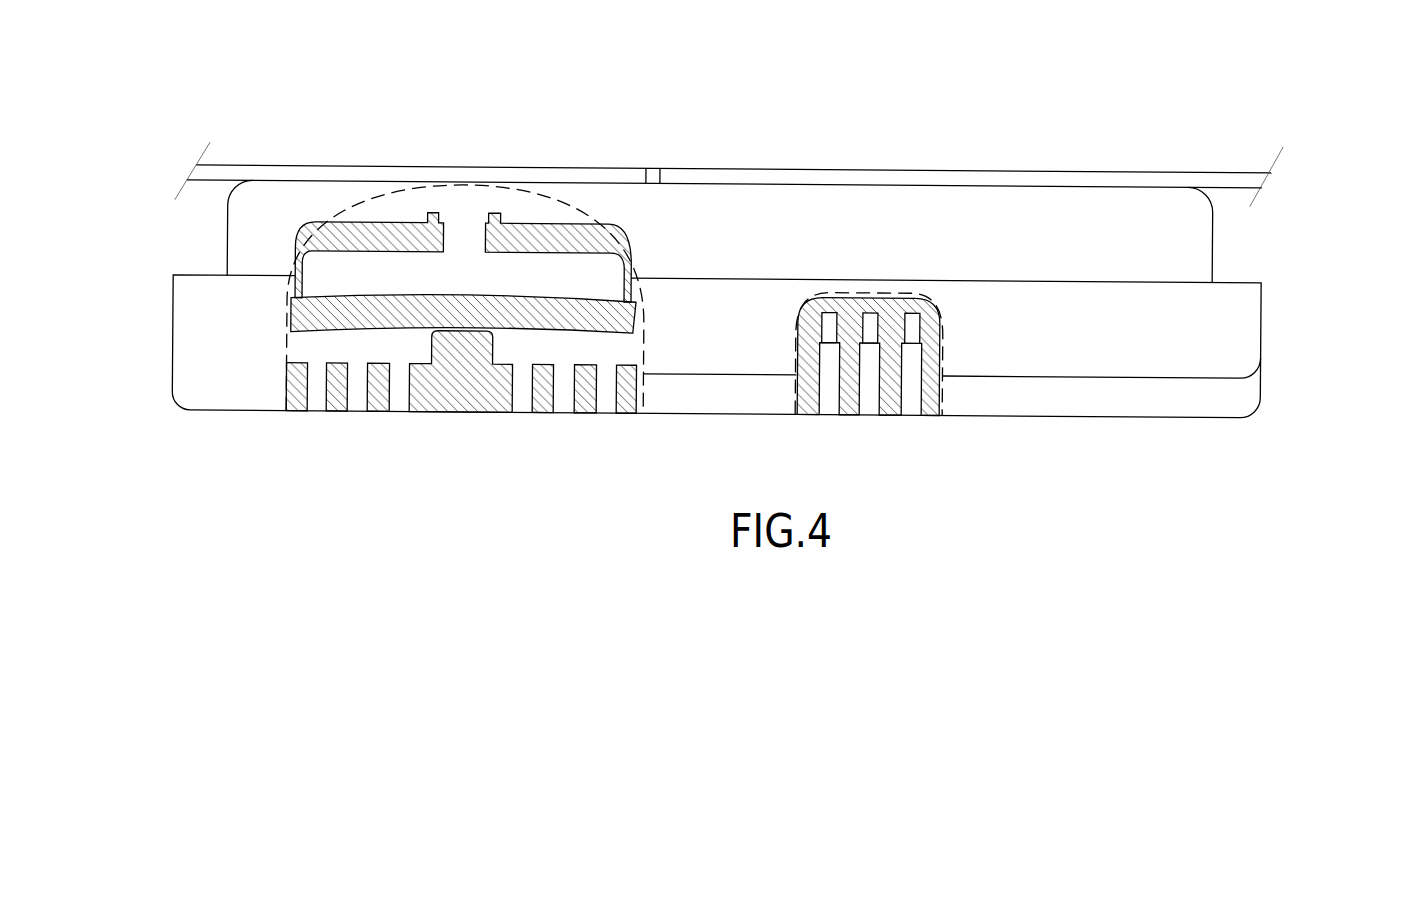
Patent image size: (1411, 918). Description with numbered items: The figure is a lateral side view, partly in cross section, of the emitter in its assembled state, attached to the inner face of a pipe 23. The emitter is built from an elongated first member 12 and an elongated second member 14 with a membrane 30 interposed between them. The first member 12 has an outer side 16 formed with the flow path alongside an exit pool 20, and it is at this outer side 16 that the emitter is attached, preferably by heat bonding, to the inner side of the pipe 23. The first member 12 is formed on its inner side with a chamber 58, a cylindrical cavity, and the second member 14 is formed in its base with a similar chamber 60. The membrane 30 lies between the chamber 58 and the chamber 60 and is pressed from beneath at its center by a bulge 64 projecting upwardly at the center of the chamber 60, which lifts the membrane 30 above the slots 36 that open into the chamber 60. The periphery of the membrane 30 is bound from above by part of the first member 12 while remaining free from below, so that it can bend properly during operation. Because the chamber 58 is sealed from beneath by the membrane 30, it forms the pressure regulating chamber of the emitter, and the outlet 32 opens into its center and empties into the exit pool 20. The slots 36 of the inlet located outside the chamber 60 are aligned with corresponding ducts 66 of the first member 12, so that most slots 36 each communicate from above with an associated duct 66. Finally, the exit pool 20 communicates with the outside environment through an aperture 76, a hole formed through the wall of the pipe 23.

The first member 12 is at (1216, 248).
The second member 14 is at (1268, 323).
The outer side 16 is at (945, 183).
The exit pool 20 is at (540, 207).
The pipe 23 is at (248, 166).
The membrane 30 is at (340, 296).
The outlet 32 is at (443, 243).
The slots 36 is at (522, 397).
The chamber 58 is at (570, 272).
The chamber 60 is at (575, 353).
The bulge 64 is at (433, 338).
The ducts 66 is at (910, 327).
The aperture 76 is at (660, 168).